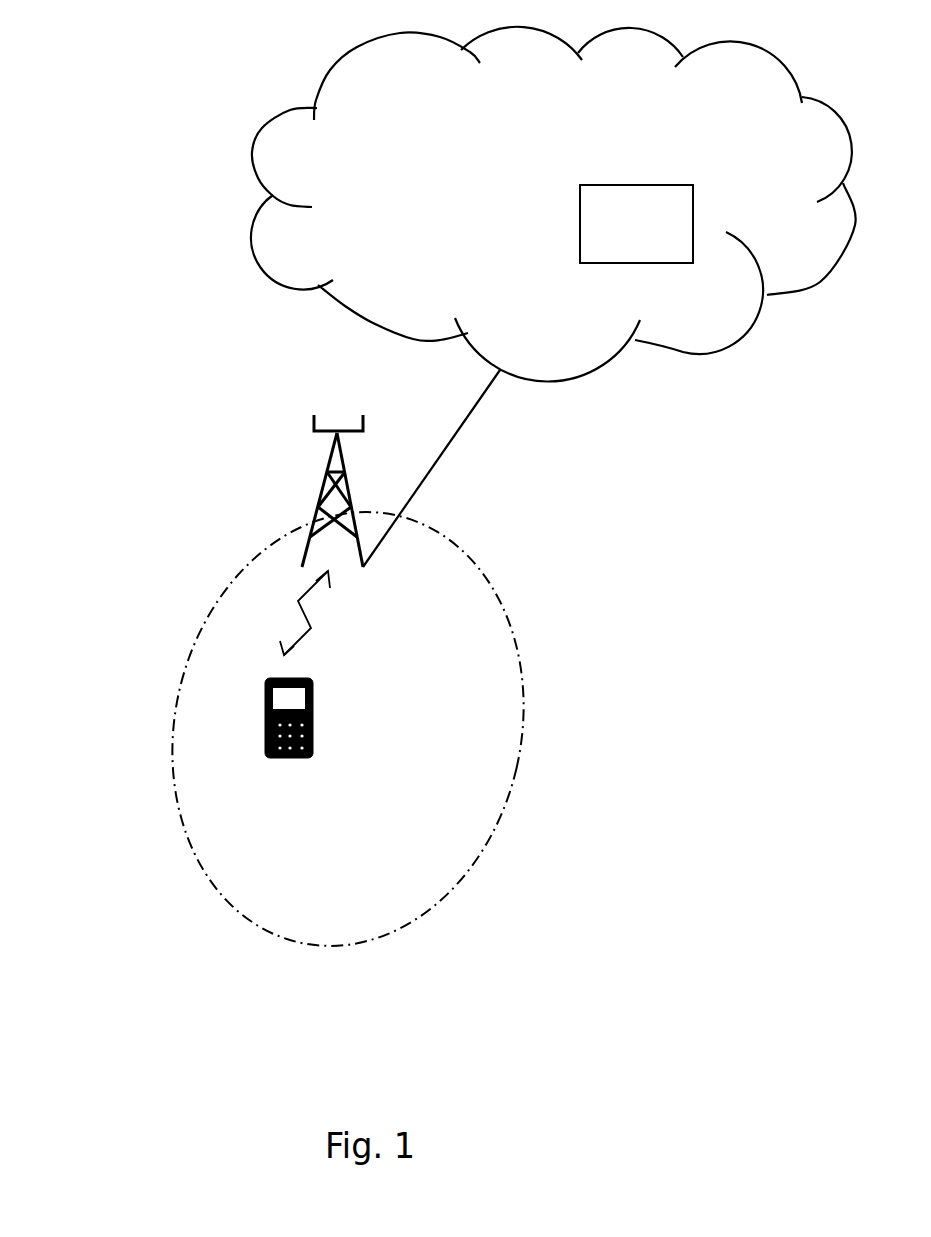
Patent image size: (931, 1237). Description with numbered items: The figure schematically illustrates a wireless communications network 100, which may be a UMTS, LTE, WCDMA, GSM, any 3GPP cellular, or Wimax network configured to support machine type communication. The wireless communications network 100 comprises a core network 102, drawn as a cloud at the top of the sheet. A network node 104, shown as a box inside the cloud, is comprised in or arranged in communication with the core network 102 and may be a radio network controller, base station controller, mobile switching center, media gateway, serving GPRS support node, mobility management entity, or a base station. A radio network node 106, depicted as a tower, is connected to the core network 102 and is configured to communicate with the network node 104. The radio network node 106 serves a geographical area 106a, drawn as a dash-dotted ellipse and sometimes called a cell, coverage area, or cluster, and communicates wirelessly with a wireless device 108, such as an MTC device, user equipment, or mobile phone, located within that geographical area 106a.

The wireless communications network 100 is at (197, 272).
The core network 102 is at (265, 127).
The network node 104 is at (638, 185).
The radio network node 106 is at (320, 505).
The geographical area 106a is at (257, 578).
The wireless device 108 is at (328, 741).